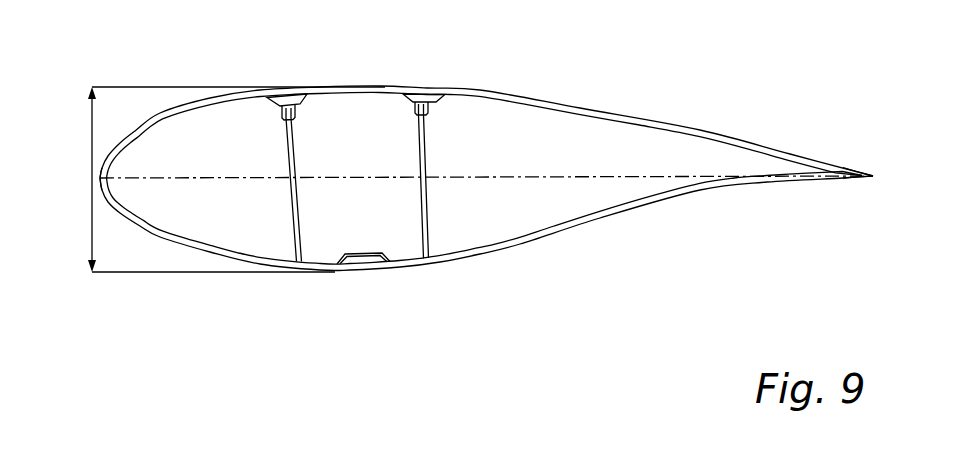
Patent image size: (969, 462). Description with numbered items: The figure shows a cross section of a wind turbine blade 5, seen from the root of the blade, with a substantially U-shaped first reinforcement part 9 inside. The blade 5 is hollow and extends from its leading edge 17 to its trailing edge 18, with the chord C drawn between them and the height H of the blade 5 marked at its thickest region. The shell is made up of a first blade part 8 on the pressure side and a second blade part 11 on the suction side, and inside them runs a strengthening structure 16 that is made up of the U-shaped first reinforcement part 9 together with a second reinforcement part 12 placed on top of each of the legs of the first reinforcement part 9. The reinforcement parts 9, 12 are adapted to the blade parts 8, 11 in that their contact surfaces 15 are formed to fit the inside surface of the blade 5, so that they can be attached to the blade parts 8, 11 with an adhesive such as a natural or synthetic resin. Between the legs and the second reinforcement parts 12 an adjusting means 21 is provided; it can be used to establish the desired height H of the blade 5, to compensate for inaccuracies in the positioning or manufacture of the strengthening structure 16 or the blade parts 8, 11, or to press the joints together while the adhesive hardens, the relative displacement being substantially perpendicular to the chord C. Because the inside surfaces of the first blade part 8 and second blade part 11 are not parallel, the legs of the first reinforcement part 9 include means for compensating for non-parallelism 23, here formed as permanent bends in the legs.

The wind turbine blade 5 is at (706, 108).
The first blade part 8 is at (613, 212).
The first reinforcement part 9 is at (430, 237).
The second blade part 11 is at (507, 93).
The second reinforcement part 12 is at (422, 94).
The contact surface 15 is at (287, 97).
The strengthening structure 16 is at (262, 126).
The leading edge 17 is at (100, 178).
The trailing edge 18 is at (877, 177).
The adjusting means 21 is at (427, 113).
The means for compensating for non-parallelism 23 is at (298, 140).
The chord C is at (580, 177).
The height of the blade H is at (226, 179).